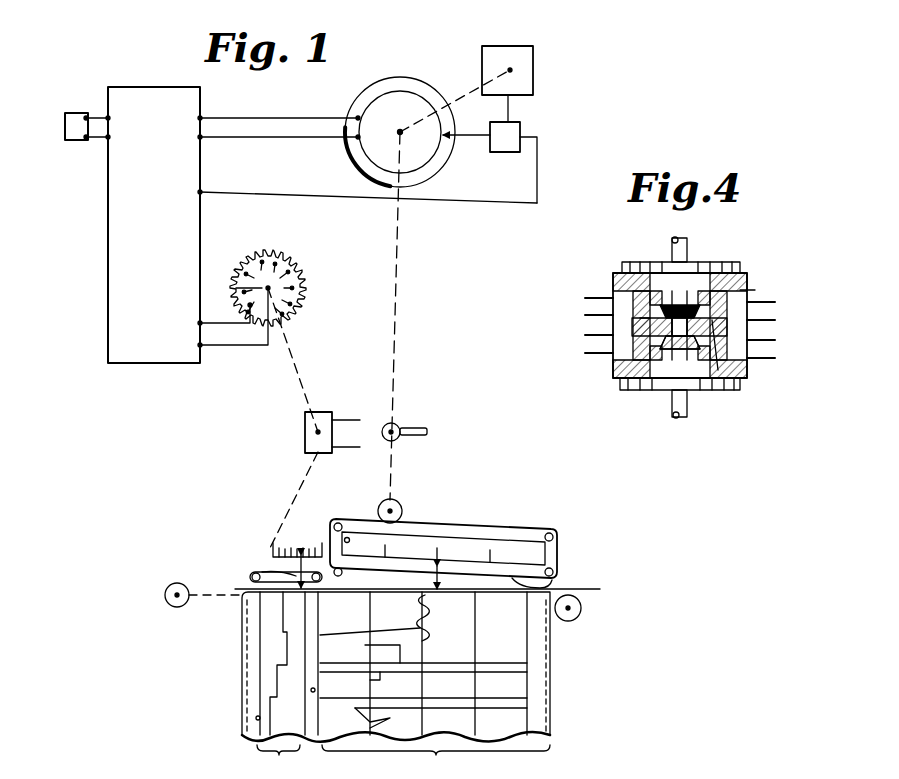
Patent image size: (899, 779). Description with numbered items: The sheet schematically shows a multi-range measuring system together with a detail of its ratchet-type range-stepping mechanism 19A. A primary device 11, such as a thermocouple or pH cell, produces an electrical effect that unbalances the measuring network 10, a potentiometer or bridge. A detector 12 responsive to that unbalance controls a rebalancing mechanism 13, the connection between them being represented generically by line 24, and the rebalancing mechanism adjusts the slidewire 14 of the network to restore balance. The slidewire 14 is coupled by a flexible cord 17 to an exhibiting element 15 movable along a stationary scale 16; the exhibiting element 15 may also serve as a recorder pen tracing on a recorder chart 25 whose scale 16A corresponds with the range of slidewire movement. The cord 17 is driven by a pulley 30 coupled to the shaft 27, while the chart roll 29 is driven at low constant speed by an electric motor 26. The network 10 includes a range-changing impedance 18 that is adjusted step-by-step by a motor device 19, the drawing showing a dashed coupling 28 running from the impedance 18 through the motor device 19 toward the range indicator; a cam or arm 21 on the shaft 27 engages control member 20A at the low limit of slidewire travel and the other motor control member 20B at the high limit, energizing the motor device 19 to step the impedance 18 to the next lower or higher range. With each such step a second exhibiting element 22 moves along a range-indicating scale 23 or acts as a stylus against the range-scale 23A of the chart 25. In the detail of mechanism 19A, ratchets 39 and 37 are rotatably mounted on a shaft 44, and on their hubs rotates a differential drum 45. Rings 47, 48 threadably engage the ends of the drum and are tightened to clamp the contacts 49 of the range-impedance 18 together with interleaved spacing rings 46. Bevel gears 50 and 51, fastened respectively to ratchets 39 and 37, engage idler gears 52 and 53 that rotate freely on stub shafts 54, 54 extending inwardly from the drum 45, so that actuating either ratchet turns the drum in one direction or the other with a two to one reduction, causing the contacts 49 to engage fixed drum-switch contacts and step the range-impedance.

In FIG. 1, the measuring network 10 is at (152, 232).
In FIG. 1, the primary device 11 is at (66, 122).
In FIG. 1, the detector 12 is at (505, 152).
In FIG. 1, the rebalancing mechanism 13 is at (533, 86).
In FIG. 1, the slidewire 14 is at (437, 166).
In FIG. 1, the exhibiting element 15 is at (441, 580).
In FIG. 1, the stationary scale 16 is at (480, 538).
In FIG. 1, the scale of recorder chart 16A is at (436, 762).
In FIG. 1, the flexible cord 17 is at (540, 585).
In FIG. 1, the range-changing impedance 18 is at (304, 288).
In FIG. 1, the motor device 19 is at (305, 432).
In FIG. 1, the control member 20A is at (345, 414).
In FIG. 1, the motor control member 20B is at (345, 450).
In FIG. 1, the cam or arm 21 is at (420, 428).
In FIG. 1, the second exhibiting element 22 is at (272, 574).
In FIG. 1, the range-indicating scale 23 is at (282, 545).
In FIG. 1, the range-scale of recorder chart 23A is at (278, 762).
In FIG. 1, the connecting line 24 is at (508, 112).
In FIG. 1, the recorder chart 25 is at (248, 664).
In FIG. 1, the electric motor 26 is at (168, 604).
In FIG. 1, the shaft 27 is at (458, 96).
In FIG. 1, the mechanical coupling 28 is at (294, 357).
In FIG. 1, the chart roll 29 is at (578, 616).
In FIG. 1, the pulley 30 is at (402, 506).
In FIG. 4, the ratchet 37 is at (700, 388).
In FIG. 4, the ratchet 39 is at (720, 268).
In FIG. 4, the shaft 44 is at (684, 250).
In FIG. 4, the differential drum 45 is at (640, 265).
In FIG. 4, the spacing rings 46 is at (747, 311).
In FIG. 4, the ring 47 is at (704, 316).
In FIG. 4, the ring 48 is at (745, 386).
In FIG. 1, the contacts 49 is at (250, 282).
In FIG. 4, the contacts 49 is at (585, 300).
In FIG. 4, the bevel gear 50 is at (670, 300).
In FIG. 4, the bevel gear 51 is at (655, 378).
In FIG. 4, the idler gear 52 is at (636, 318).
In FIG. 4, the idler gear 53 is at (748, 296).
In FIG. 4, the stub shafts 54 is at (640, 322).
In FIG. 4, the range-stepping mechanism 19A is at (736, 451).